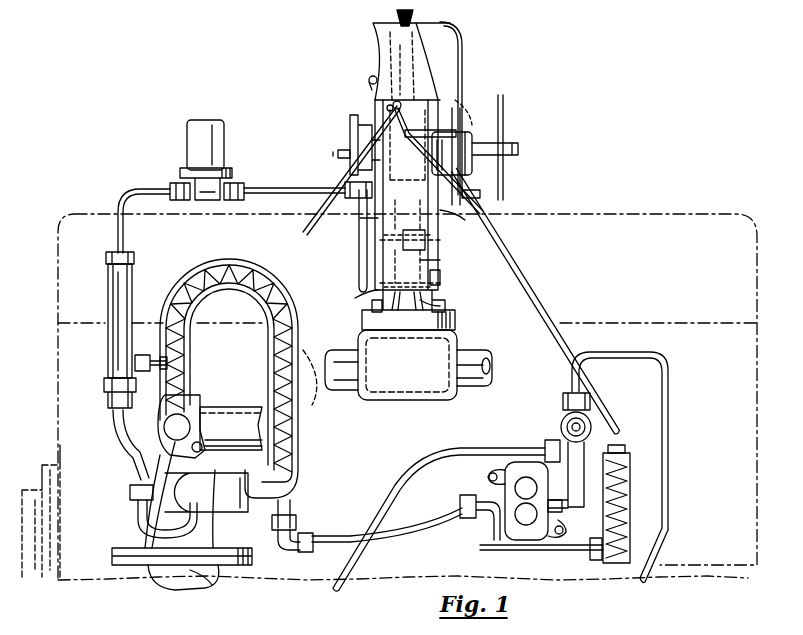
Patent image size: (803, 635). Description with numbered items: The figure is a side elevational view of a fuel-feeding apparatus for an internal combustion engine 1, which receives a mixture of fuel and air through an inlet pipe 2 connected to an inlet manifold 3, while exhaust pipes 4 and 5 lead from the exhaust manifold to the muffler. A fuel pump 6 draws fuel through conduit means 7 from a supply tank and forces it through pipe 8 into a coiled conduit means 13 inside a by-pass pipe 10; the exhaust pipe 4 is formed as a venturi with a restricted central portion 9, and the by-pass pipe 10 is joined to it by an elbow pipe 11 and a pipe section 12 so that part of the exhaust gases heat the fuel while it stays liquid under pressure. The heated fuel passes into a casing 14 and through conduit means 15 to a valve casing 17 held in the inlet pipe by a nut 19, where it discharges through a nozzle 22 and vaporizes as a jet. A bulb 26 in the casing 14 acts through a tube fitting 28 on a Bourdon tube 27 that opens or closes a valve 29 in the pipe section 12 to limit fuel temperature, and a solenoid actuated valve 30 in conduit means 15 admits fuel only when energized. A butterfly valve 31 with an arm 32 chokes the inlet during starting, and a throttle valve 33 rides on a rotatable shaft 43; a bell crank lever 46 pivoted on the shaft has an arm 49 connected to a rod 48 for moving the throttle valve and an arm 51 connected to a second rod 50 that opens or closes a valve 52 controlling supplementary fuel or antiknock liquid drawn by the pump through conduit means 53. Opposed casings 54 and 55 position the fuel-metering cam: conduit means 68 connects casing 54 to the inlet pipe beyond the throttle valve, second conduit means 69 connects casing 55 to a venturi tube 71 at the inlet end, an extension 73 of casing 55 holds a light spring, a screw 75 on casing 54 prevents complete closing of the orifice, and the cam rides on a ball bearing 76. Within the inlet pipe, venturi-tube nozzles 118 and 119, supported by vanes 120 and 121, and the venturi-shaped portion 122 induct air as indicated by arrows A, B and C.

The internal combustion engine 1 is at (658, 212).
The inlet pipe 2 is at (468, 100).
The inlet manifold 3 is at (420, 398).
The exhaust pipe 4 is at (125, 445).
The exhaust pipe 5 is at (148, 572).
The fuel pump 6 is at (505, 533).
The conduit means 7 is at (392, 480).
The pipe 8 is at (392, 518).
The restricted central portion 9 is at (128, 482).
The by-pass pipe 10 is at (203, 262).
The elbow pipe 11 is at (190, 410).
The pipe section 12 is at (292, 522).
The conduit means 13 is at (302, 402).
The casing 14 is at (105, 314).
The conduit means 15 is at (140, 186).
The valve casing 17 is at (480, 183).
The nut 19 is at (335, 177).
The nozzle 22 is at (468, 211).
The bulb 26 is at (110, 275).
The Bourdon tube 27 is at (137, 516).
The tube fitting 28 is at (104, 394).
The valve 29 is at (231, 428).
The solenoid actuated valve 30 is at (192, 120).
The butterfly valve 31 is at (395, 68).
The arm 32 is at (368, 82).
The throttle valve 33 is at (472, 106).
The rotatable shaft 43 is at (435, 100).
The bell crank lever 46 is at (462, 122).
The rod 48 is at (302, 216).
The arm 49 is at (388, 106).
The second rod 50 is at (530, 285).
The arm 51 is at (503, 165).
The valve 52 is at (560, 428).
The conduit means 53 is at (672, 440).
The casing 54 is at (350, 128).
The casing 55 is at (500, 136).
The conduit means 68 is at (358, 264).
The second conduit means 69 is at (468, 40).
The venturi tube 71 is at (398, 16).
The extension 73 is at (520, 148).
The screw 75 is at (335, 152).
The ball bearing 76 is at (721, 633).
The nozzle 118 is at (430, 242).
The nozzle 119 is at (444, 282).
The vane 120 is at (380, 240).
The vane 121 is at (380, 290).
The venturi-shaped portion 122 is at (446, 312).
The arrow A is at (350, 215).
The arrows B is at (449, 256).
The arrows C is at (348, 308).